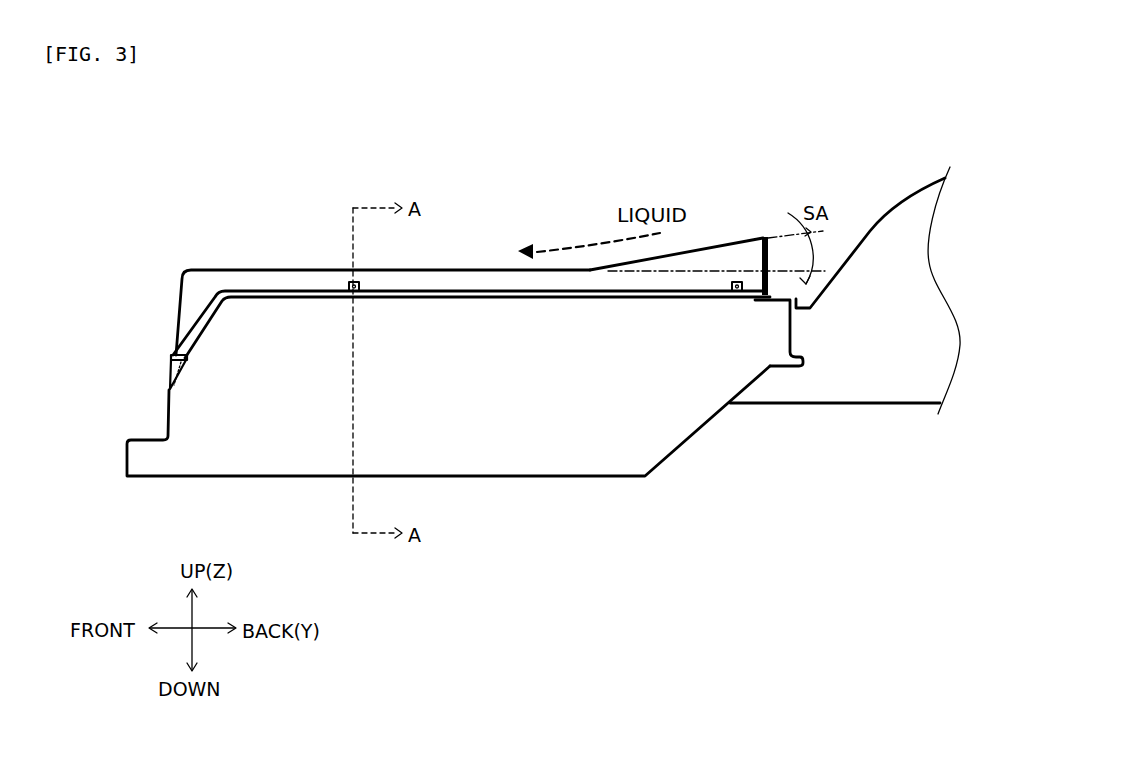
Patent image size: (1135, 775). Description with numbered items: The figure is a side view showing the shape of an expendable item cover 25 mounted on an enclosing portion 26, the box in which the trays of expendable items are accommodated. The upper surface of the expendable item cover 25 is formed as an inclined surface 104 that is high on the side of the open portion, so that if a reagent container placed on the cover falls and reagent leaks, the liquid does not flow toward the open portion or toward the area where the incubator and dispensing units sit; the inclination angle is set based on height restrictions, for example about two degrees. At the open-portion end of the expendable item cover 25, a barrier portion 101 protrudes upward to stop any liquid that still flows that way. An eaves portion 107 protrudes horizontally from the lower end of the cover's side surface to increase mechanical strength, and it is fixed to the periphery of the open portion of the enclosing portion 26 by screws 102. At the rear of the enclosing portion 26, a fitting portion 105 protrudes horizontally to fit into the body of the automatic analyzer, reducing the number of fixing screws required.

The expendable item cover 25 is at (488, 268).
The enclosing portion 26 is at (540, 477).
The barrier portion 101 is at (764, 232).
The screws 102 is at (349, 282).
The inclined surface 104 is at (697, 248).
The fitting portion 105 is at (792, 366).
The eaves portion 107 is at (173, 357).